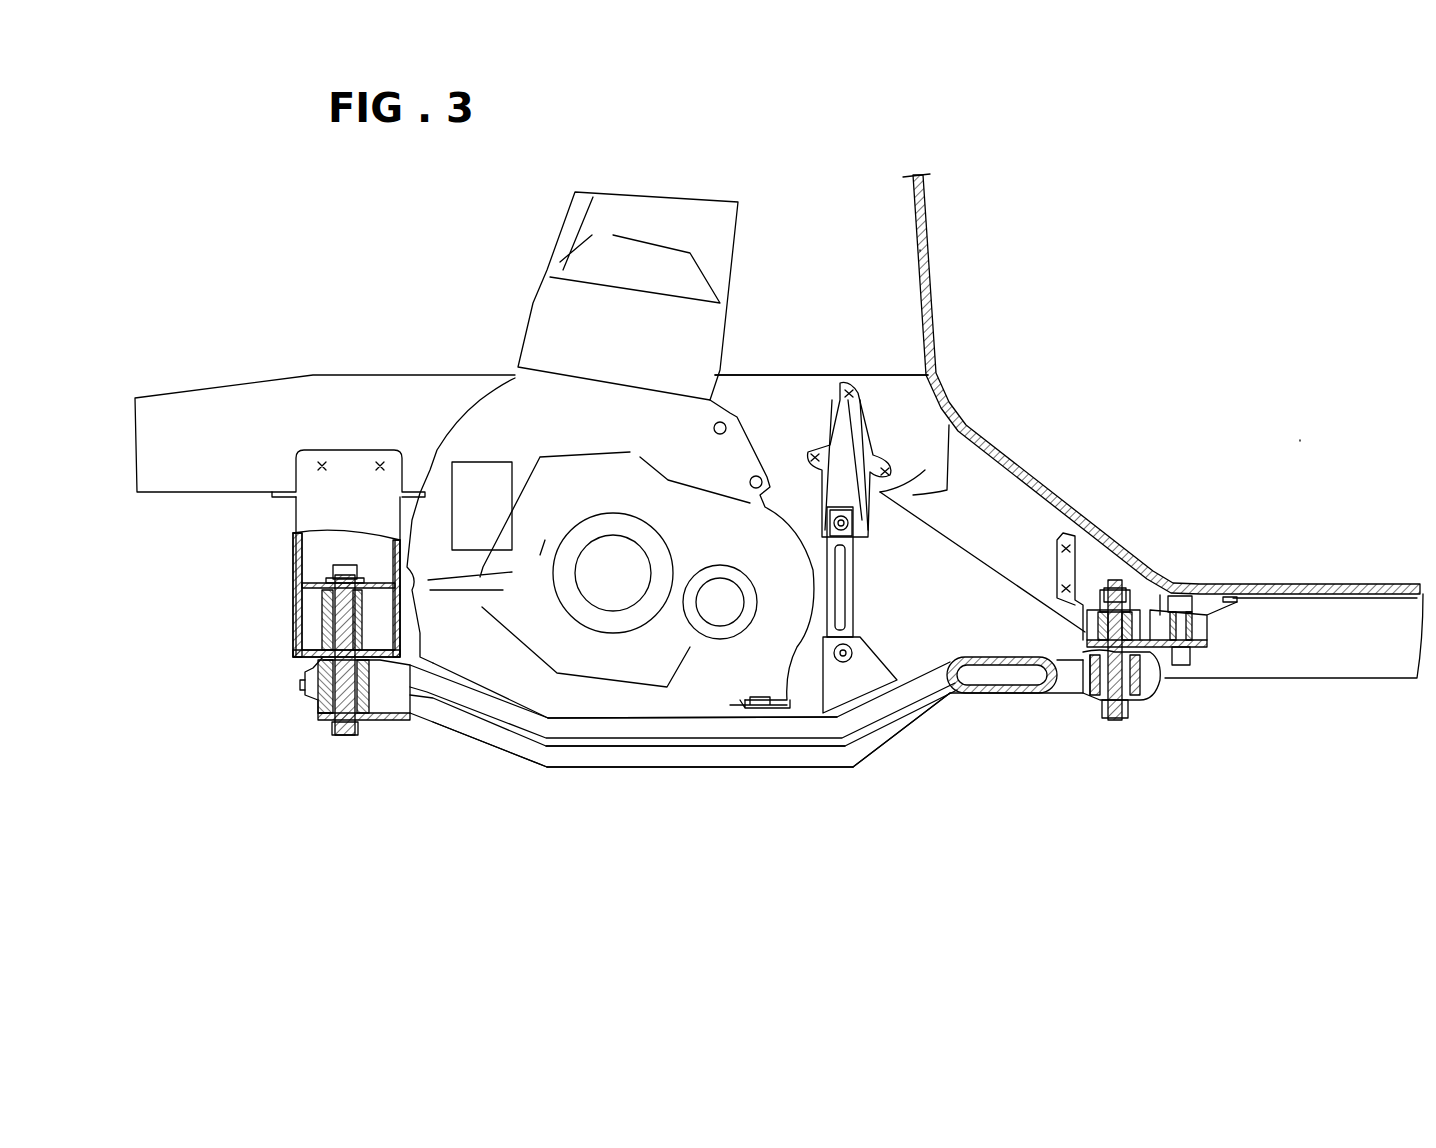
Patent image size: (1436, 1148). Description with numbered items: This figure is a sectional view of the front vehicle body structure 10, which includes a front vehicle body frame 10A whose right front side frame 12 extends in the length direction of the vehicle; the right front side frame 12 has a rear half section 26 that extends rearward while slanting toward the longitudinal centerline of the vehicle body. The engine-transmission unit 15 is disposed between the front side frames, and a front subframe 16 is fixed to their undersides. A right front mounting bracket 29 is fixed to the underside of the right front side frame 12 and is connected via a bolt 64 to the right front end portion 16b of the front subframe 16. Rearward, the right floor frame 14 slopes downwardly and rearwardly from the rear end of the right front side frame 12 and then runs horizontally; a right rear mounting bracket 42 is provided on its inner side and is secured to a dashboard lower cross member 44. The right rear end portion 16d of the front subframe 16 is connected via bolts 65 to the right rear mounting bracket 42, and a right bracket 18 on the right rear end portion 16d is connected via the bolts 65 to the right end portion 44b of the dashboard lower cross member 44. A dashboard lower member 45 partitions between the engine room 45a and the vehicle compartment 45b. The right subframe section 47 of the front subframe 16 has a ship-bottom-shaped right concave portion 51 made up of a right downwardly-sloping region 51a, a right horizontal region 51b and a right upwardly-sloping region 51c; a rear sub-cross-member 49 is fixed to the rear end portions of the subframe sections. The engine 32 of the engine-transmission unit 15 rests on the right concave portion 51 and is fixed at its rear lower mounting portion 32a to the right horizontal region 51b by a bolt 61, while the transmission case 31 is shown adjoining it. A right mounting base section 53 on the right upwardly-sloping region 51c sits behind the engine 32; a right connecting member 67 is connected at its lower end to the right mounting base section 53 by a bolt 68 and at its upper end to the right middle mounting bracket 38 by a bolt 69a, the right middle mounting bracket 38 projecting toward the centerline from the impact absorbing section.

The front vehicle body structure 10 is at (995, 130).
The front vehicle body frame 10A is at (313, 345).
The right front side frame 12 is at (397, 368).
The right floor frame 14 is at (1375, 610).
The engine-transmission unit 15 is at (645, 180).
The front subframe 16 is at (528, 798).
The right front end portion 16b is at (318, 710).
The right rear end portion 16d is at (1150, 690).
The right bracket 18 is at (1200, 655).
The rear half section 26 is at (780, 380).
The right front mounting bracket 29 is at (297, 547).
The transmission case 31 is at (455, 663).
The engine 32 is at (533, 318).
The rear lower mounting portion 32a is at (762, 705).
The right middle mounting bracket 38 is at (875, 440).
The right rear mounting bracket 42 is at (1060, 573).
The dashboard lower cross member 44 is at (1213, 640).
The right end portion 44b is at (1210, 615).
The dashboard lower member 45 is at (933, 325).
The engine room 45a is at (845, 192).
The vehicle compartment 45b is at (1290, 310).
The right subframe section 47 is at (650, 777).
The rear sub-cross-member 49 is at (977, 695).
The right concave portion 51 is at (697, 767).
The right downwardly-sloping region 51a is at (472, 732).
The right horizontal region 51b is at (592, 762).
The right upwardly-sloping region 51c is at (905, 730).
The right mounting base section 53 is at (840, 690).
The bolt 61 is at (770, 700).
The bolt 64 is at (330, 607).
The bolts 65 is at (1112, 597).
The right connecting member 67 is at (855, 585).
The bolt 68 is at (855, 653).
The bolt 69a is at (845, 523).